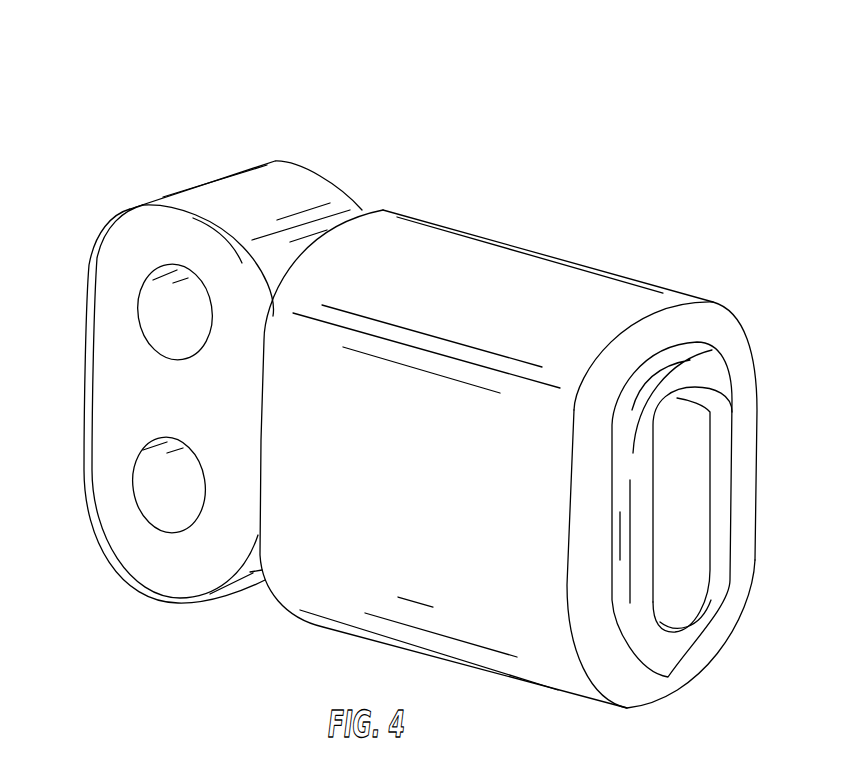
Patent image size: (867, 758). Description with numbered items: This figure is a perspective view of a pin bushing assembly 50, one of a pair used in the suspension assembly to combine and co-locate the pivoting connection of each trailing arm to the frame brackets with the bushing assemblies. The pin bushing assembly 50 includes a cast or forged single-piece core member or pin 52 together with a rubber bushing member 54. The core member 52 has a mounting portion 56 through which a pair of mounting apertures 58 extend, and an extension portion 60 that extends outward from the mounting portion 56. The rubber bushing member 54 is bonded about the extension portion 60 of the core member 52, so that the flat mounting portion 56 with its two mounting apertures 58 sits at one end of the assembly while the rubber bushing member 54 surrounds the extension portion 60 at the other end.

The pin bushing assembly 50 is at (573, 156).
The core member 52 is at (302, 168).
The rubber bushing member 54 is at (622, 274).
The mounting portion 56 is at (204, 184).
The mounting apertures 58 is at (137, 318).
The extension portion 60 is at (748, 433).